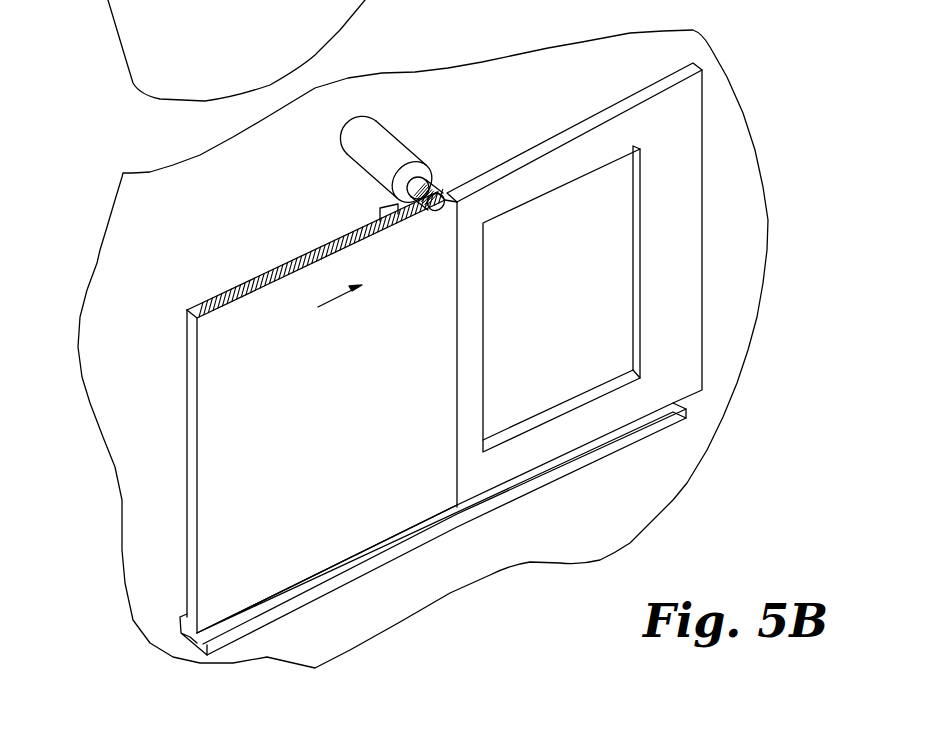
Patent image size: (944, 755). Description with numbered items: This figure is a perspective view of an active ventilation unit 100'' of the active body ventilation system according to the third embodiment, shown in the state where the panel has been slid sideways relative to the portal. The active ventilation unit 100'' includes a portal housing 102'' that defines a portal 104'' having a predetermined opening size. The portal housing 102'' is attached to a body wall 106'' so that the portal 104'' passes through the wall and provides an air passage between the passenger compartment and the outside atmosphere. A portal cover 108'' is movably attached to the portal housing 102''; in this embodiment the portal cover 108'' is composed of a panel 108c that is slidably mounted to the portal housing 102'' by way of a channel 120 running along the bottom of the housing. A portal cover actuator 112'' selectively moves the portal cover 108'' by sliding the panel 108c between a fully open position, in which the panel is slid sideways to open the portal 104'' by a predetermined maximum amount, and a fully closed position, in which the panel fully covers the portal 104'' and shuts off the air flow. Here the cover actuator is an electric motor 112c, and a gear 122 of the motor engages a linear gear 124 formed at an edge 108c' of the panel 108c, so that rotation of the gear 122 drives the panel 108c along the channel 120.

The active ventilation unit 100'' is at (776, 164).
The portal housing 102'' is at (634, 285).
The portal 104'' is at (650, 299).
The body wall 106'' is at (423, 334).
The portal cover 108'' is at (277, 416).
The panel 108c is at (129, 517).
The edge of the panel 108c' is at (257, 335).
The portal cover actuator 112'' is at (400, 147).
The electric motor 112c is at (358, 172).
The channel 120 is at (625, 442).
The gear 122 is at (432, 182).
The linear gear 124 is at (268, 270).